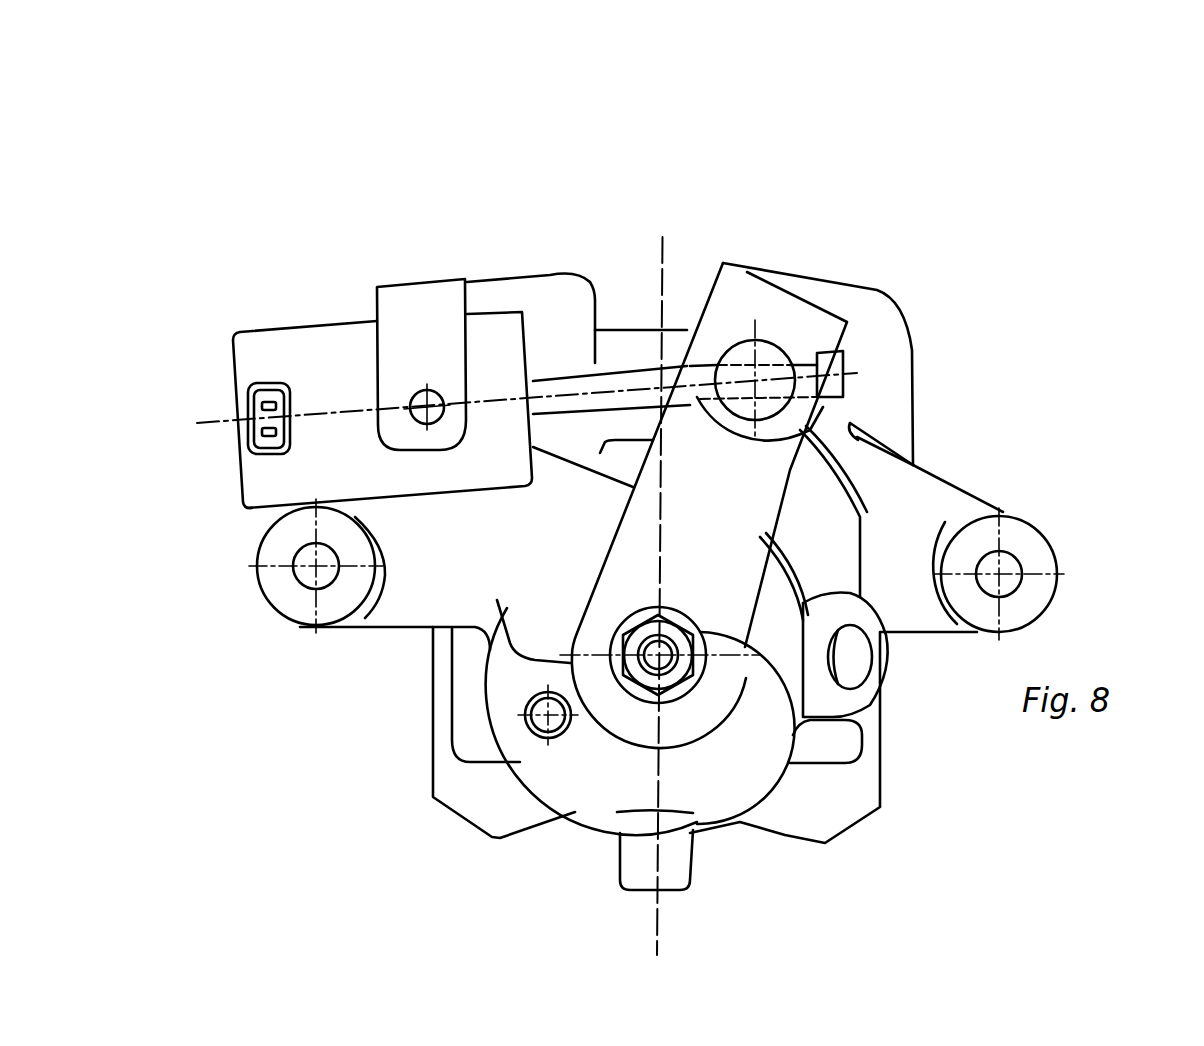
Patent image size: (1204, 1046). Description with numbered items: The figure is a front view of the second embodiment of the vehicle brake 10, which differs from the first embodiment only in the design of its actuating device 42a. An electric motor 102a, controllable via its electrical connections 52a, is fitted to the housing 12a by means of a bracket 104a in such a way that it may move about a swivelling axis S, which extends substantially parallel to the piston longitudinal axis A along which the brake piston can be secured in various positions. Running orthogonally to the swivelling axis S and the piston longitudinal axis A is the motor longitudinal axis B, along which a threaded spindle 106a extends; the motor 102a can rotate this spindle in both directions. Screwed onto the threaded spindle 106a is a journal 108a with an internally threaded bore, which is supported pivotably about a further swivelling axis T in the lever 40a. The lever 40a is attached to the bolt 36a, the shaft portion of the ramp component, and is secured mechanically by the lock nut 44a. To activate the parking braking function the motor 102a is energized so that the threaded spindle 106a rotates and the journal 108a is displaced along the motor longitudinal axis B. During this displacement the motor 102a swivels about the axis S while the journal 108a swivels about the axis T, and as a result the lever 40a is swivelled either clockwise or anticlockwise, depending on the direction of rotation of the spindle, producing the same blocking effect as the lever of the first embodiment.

The vehicle brake 10 is at (1120, 153).
The housing 12a is at (893, 382).
The bolt 36a is at (660, 665).
The lever 40a is at (743, 515).
The actuating device 42a is at (642, 248).
The lock nut 44a is at (745, 647).
The electrical connections 52a is at (257, 457).
The electric motor 102a is at (305, 325).
The bracket 104a is at (430, 288).
The threaded spindle 106a is at (627, 385).
The journal 108a is at (788, 332).
The swivelling axis T is at (870, 293).
The motor longitudinal axis B is at (197, 423).
The swivelling axis S is at (430, 424).
The piston longitudinal axis A is at (882, 808).